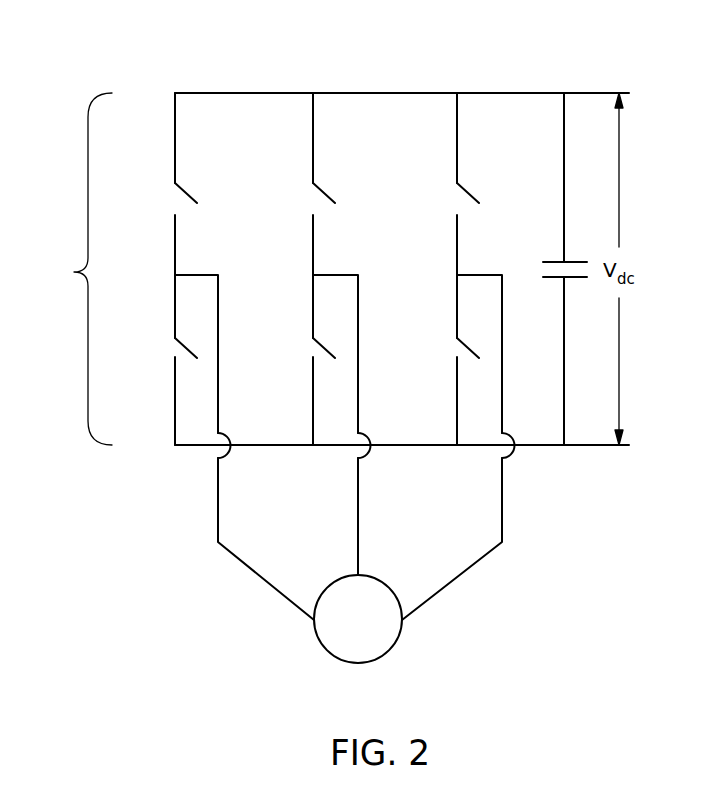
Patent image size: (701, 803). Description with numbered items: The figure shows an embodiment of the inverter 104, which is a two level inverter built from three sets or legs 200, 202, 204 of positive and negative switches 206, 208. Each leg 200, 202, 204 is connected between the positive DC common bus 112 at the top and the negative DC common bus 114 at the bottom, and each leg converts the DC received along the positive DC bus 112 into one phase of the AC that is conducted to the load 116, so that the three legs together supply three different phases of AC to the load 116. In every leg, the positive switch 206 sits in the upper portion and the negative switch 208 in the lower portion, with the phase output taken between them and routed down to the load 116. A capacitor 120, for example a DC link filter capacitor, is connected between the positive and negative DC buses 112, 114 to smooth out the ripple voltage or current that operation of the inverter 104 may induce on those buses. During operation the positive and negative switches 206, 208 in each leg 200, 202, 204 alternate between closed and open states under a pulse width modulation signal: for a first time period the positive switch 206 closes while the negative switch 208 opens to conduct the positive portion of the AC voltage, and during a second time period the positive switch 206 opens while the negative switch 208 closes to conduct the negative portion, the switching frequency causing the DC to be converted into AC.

The inverter 104 is at (69, 269).
The positive DC common bus 112 is at (402, 93).
The negative DC common bus 114 is at (402, 445).
The load 116 is at (383, 578).
The capacitor 120 is at (555, 260).
The first leg 200 is at (217, 65).
The second leg 202 is at (357, 65).
The third leg 204 is at (501, 65).
The positive switch 206 is at (186, 192).
The negative switch 208 is at (174, 343).